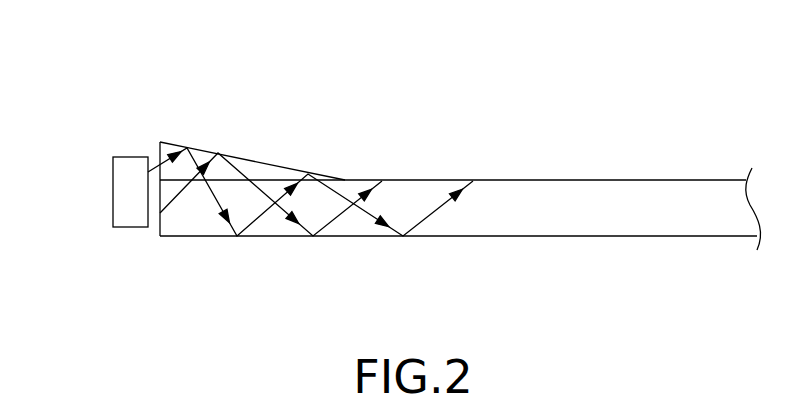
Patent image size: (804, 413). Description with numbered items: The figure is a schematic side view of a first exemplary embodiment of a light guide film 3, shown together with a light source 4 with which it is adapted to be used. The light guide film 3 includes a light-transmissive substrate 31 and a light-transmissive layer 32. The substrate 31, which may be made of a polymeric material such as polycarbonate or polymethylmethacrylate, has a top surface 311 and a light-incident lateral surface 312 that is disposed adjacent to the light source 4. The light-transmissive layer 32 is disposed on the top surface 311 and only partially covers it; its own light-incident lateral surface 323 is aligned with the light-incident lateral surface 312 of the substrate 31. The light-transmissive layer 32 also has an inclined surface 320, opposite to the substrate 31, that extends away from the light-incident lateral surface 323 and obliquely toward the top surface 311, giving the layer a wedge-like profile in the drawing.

The light guide film 3 is at (443, 174).
The light-transmissive substrate 31 is at (453, 207).
The top surface 311 is at (540, 180).
The light-incident lateral surface 312 is at (160, 232).
The light-transmissive layer 32 is at (242, 102).
The inclined surface 320 is at (281, 168).
The light-incident lateral surface 323 is at (158, 143).
The light source 4 is at (130, 162).